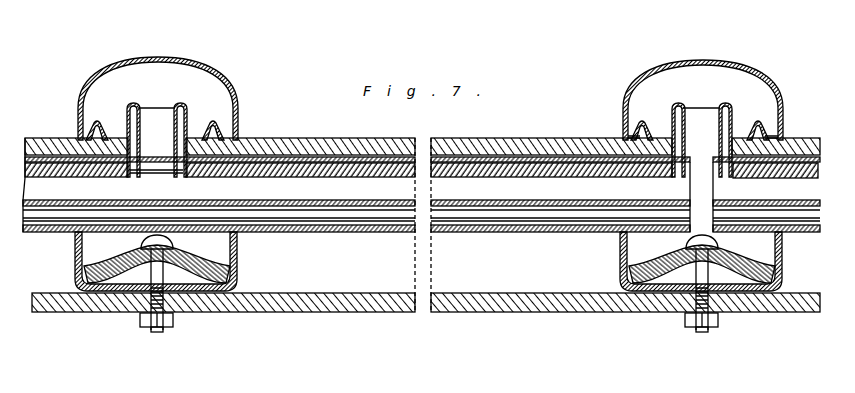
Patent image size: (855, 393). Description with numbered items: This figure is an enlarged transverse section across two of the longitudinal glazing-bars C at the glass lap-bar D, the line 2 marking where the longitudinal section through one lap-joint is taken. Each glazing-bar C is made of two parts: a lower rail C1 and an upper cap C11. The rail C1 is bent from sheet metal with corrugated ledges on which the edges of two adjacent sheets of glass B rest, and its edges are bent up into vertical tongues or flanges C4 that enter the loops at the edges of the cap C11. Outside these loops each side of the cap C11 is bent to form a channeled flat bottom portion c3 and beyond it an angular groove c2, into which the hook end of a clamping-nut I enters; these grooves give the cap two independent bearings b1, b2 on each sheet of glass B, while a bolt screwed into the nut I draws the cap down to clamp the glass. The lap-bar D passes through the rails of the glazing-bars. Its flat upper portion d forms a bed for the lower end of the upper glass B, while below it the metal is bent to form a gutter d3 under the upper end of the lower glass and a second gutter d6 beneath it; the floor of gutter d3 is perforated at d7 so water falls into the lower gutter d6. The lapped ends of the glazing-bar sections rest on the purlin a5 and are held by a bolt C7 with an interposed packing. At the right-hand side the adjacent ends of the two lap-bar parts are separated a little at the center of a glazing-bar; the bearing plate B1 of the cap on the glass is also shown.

The section line 2 2 is at (157, 362).
The sheet of glass B is at (55, 139).
The bearing of the cap on the glass B1 is at (752, 179).
The upper flat portion of the lap-bar d is at (268, 156).
The gutter of the lap-bar d3 is at (285, 178).
The second or lower gutter of the lap-bar d6 is at (556, 234).
The perforation in the lap-bar gutter floor d7 is at (44, 203).
The lap-bar D is at (70, 236).
The purlin a5 is at (318, 301).
The clamping-nut I is at (237, 278).
The longitudinal glazing-bar C is at (430, 91).
The rail C1 is at (128, 282).
The cap C11 is at (176, 262).
The tongue or flange of the rail C4 is at (694, 144).
The bolt at the lap-joint C7 is at (170, 332).
The angular chamber or groove of the cap c2 is at (90, 124).
The channeled flat bottom portion of the cap c3 is at (113, 124).
The bearing of the cap on the glass b2 is at (660, 127).
The bearing of the cap on the glass b1 is at (625, 133).